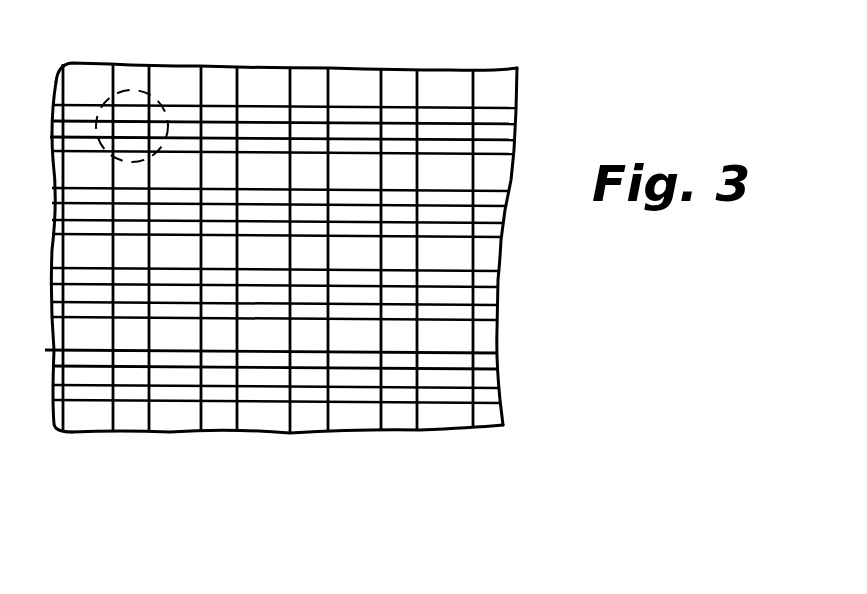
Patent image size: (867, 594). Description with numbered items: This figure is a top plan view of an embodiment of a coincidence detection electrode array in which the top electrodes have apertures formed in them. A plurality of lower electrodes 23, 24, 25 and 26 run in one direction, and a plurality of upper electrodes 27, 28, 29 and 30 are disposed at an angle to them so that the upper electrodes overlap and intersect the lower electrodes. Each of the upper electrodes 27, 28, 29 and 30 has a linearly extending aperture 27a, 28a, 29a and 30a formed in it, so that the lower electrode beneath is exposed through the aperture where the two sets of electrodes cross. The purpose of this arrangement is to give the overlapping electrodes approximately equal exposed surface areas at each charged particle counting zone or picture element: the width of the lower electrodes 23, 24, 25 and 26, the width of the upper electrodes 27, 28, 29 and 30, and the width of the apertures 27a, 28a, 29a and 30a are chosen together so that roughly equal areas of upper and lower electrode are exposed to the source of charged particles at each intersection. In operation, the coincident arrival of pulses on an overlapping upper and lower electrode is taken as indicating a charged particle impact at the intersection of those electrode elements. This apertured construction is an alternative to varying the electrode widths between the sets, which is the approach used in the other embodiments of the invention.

The lower electrode 23 is at (128, 78).
The lower electrode 24 is at (217, 82).
The lower electrode 25 is at (308, 80).
The lower electrode 26 is at (400, 82).
The upper electrode 27 is at (487, 131).
The aperture 27a is at (513, 117).
The upper electrode 28 is at (500, 193).
The aperture 28a is at (453, 213).
The upper electrode 29 is at (485, 273).
The aperture 29a is at (460, 292).
The upper electrode 30 is at (488, 357).
The aperture 30a is at (453, 373).